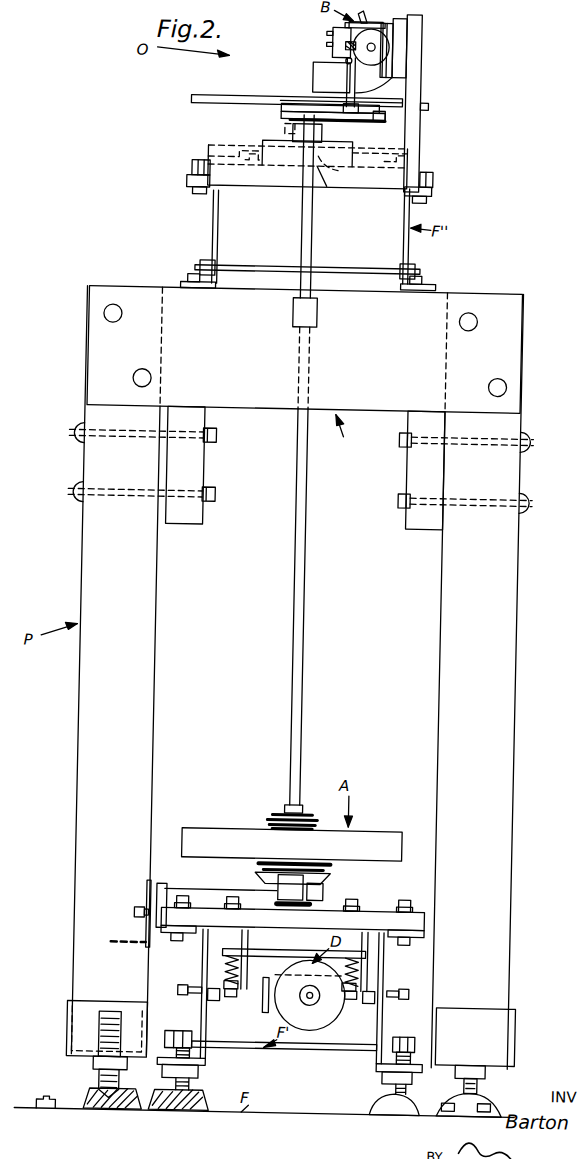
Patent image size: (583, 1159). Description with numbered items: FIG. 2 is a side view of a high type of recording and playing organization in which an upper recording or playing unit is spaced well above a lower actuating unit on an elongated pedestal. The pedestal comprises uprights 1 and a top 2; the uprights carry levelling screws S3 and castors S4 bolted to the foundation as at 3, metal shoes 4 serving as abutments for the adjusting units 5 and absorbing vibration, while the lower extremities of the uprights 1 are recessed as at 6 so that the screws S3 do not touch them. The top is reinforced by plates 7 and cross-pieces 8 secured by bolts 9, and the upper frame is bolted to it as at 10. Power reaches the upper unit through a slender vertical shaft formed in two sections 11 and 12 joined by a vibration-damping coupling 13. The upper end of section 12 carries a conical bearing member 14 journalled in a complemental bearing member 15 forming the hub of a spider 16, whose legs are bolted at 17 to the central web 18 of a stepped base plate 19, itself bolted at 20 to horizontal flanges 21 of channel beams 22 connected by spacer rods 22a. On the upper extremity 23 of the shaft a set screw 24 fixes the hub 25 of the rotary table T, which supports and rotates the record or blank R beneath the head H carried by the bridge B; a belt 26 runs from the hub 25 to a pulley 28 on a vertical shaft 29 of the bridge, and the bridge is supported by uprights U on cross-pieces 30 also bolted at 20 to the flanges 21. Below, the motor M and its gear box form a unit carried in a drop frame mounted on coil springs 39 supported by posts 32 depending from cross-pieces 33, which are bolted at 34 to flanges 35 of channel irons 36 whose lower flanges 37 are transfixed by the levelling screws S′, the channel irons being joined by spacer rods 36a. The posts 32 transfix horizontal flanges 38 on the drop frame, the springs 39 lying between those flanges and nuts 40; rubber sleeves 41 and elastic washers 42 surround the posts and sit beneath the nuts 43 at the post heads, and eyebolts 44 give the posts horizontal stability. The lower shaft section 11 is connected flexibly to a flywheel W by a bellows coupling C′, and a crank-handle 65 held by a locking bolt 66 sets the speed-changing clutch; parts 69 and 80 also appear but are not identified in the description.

The uprights 1 is at (150, 706).
The top 2 is at (343, 436).
The bolting of castors to foundation 3 is at (52, 1102).
The metal shoes 4 is at (76, 1016).
The adjusting units 5 is at (103, 1065).
The recess 6 is at (115, 1015).
The plates 7 is at (250, 409).
The cross-pieces 8 is at (172, 527).
The bolts 9 is at (133, 378).
The bolting of frame to top 10 is at (180, 283).
The shaft section 11 is at (293, 600).
The shaft section 12 is at (305, 218).
The coupling 13 is at (311, 305).
The conical bearing member 14 is at (275, 129).
The complemental bearing member 15 is at (312, 130).
The spider 16 is at (253, 143).
The bolts 17 is at (236, 157).
The central web 18 is at (199, 158).
The stepped base plate 19 is at (402, 158).
The bolts 20 is at (183, 168).
The horizontal flanges 21 is at (178, 185).
The channel beams 22 is at (204, 229).
The spacer rods 22a is at (268, 267).
The upper extremity 23 is at (316, 188).
The set screw 24 is at (305, 113).
The hub 25 is at (290, 106).
The belt 26 is at (372, 120).
The pulley 28 is at (350, 122).
The vertical shaft 29 is at (336, 63).
The cross-pieces 30 is at (203, 148).
The posts 32 is at (239, 897).
The cross-pieces 33 is at (431, 915).
The bolts 34 is at (185, 900).
The flanges 35 is at (184, 935).
The channel irons 36 is at (210, 975).
The spacer rods 36a is at (254, 1050).
The lower flanges 37 is at (420, 1063).
The horizontal flanges 38 is at (233, 950).
The coil springs 39 is at (233, 964).
The nuts 40 is at (242, 992).
The sleeves 41 is at (368, 1022).
The washers 42 is at (198, 928).
The nuts 43 is at (243, 903).
The eyebolts 44 is at (186, 992).
The crank-handle 65 is at (153, 893).
The locking bolt 66 is at (141, 916).
The spring assembly 69 is at (270, 862).
The cam 80 is at (328, 170).
The rotary table T is at (181, 101).
The record or blank R is at (207, 97).
The head H is at (302, 70).
The uprights U is at (410, 52).
The bridge B is at (359, 61).
The flywheel W is at (202, 830).
The metal bellows coupling C′ is at (322, 819).
The motor M is at (320, 1022).
The levelling screws S′ is at (199, 1095).
The levelling screws S3 is at (108, 1080).
The castors S4 is at (97, 1111).